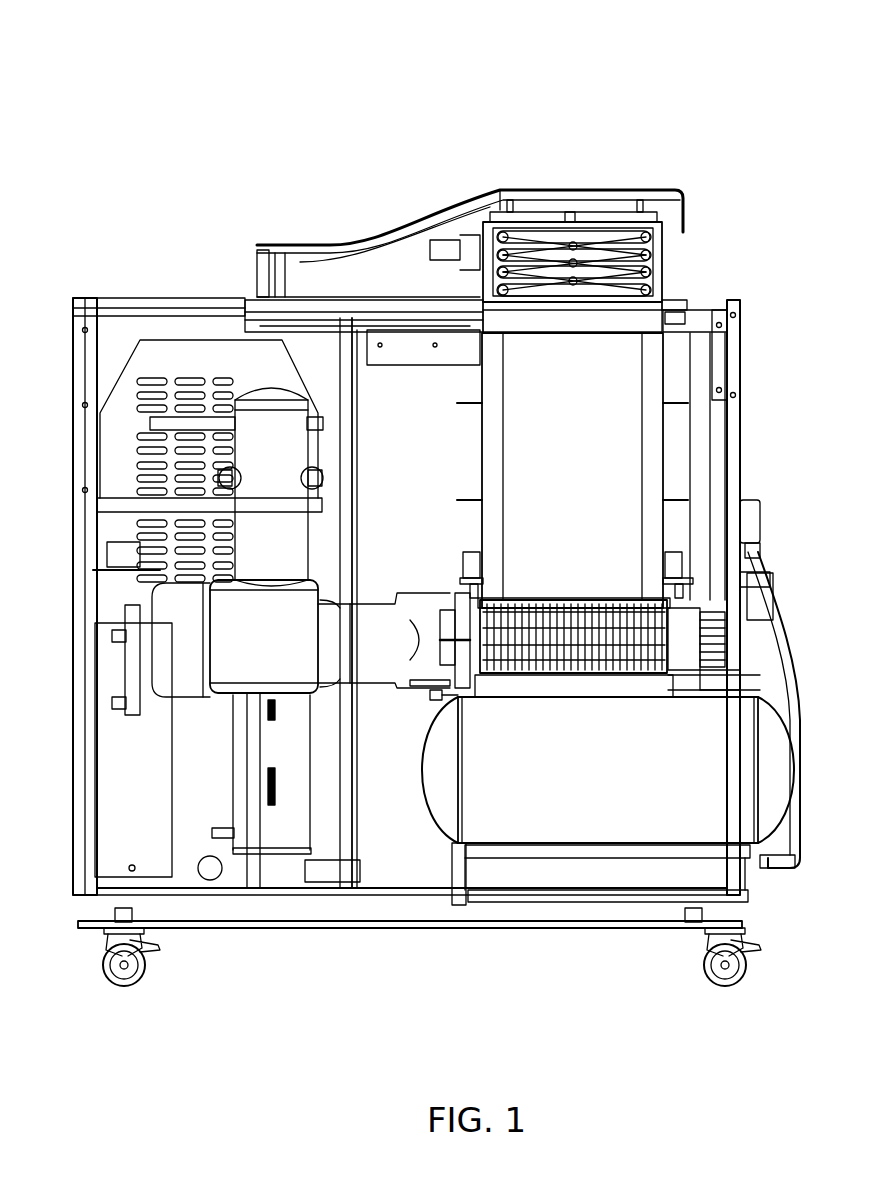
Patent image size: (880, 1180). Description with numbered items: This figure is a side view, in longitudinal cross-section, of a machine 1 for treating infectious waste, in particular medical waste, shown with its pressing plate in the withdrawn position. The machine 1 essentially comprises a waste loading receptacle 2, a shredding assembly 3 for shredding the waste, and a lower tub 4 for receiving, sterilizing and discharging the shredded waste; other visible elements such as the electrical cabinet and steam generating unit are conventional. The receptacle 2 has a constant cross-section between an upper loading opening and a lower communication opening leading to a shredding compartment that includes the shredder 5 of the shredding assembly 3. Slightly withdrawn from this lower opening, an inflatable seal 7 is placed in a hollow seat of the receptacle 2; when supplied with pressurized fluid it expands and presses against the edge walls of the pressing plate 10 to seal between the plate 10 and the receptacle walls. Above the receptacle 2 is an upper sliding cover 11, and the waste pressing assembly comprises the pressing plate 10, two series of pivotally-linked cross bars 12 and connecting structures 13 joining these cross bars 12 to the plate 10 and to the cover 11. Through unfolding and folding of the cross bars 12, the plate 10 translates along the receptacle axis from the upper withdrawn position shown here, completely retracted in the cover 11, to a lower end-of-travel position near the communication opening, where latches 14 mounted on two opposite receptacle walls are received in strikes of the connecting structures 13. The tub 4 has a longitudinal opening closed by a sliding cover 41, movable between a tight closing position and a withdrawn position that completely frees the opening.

The machine 1 is at (285, 74).
The waste loading receptacle 2 is at (656, 394).
The shredding assembly 3 is at (405, 578).
The lower tub 4 is at (722, 832).
The shredder 5 is at (650, 678).
The inflatable seal 7 is at (625, 598).
The pressing plate 10 is at (668, 300).
The upper sliding cover 11 is at (527, 188).
The pivotally-linked cross bars 12 is at (608, 232).
The connecting structures 13 is at (562, 228).
The latches 14 is at (470, 550).
The sliding cover 41 is at (803, 820).